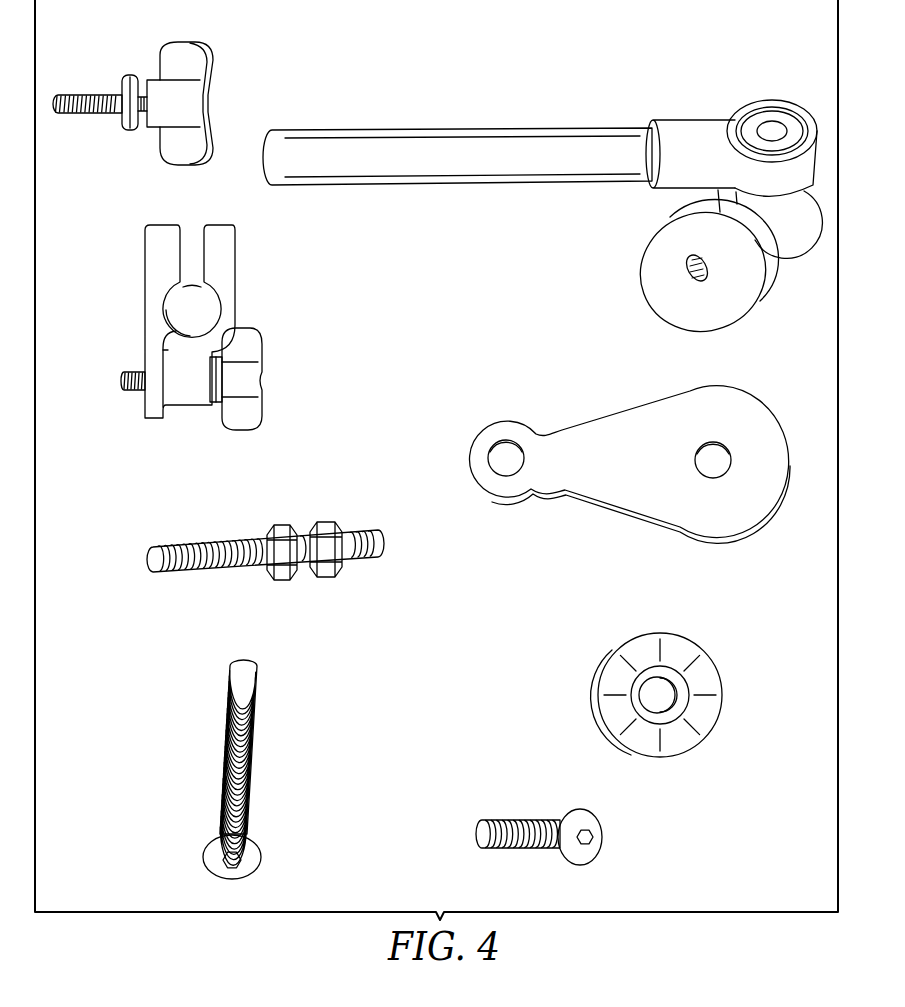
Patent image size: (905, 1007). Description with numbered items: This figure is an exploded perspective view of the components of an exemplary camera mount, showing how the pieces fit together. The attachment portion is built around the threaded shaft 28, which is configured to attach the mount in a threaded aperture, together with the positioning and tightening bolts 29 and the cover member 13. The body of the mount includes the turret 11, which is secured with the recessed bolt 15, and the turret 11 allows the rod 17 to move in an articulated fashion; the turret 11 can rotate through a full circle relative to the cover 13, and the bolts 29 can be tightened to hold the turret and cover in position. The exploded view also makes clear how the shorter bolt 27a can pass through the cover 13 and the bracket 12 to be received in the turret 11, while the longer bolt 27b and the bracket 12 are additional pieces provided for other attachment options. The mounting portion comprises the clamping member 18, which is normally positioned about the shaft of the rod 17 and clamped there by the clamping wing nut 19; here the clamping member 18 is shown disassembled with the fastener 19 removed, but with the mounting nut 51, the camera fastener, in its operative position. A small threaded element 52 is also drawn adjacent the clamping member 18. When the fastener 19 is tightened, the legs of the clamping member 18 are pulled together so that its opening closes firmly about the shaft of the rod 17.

The turret 11 is at (782, 258).
The bracket 12 is at (623, 510).
The cover member 13 is at (658, 632).
The recessed bolt 15 is at (772, 128).
The rod 17 is at (517, 130).
The clamping member 18 is at (236, 258).
The clamping wing nut 19 is at (182, 42).
The shorter bolt 27a is at (528, 820).
The longer bolt 27b is at (250, 775).
The threaded shaft 28 is at (203, 573).
The positioning and tightening bolts 29 is at (335, 522).
The mounting nut 51 is at (262, 407).
The set screw 52 is at (122, 380).